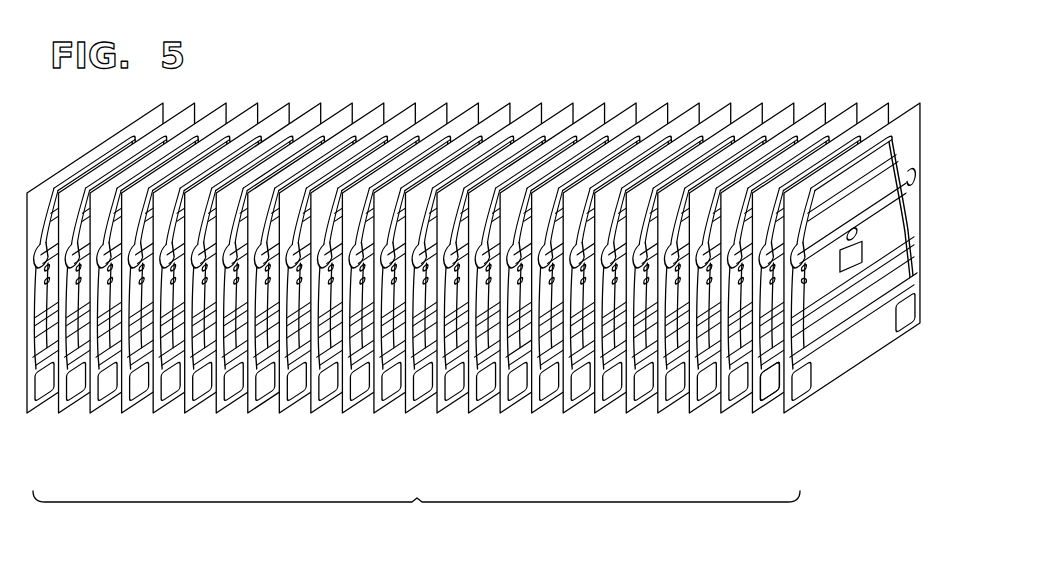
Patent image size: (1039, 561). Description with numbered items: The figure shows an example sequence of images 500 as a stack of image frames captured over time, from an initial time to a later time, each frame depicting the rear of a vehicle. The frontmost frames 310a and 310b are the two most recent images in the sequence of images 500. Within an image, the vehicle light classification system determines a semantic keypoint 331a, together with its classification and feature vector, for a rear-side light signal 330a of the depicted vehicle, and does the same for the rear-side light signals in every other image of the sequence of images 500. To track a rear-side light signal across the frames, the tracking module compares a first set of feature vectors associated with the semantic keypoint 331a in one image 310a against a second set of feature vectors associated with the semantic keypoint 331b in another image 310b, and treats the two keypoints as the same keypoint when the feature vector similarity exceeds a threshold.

The image frame (latest) 310a is at (864, 231).
The image frame (previous) 310b is at (829, 231).
The rear-side light signal 330a is at (861, 271).
The semantic keypoint 331a is at (804, 284).
The semantic keypoint 331b is at (770, 372).
The sequence of images 500 is at (418, 498).